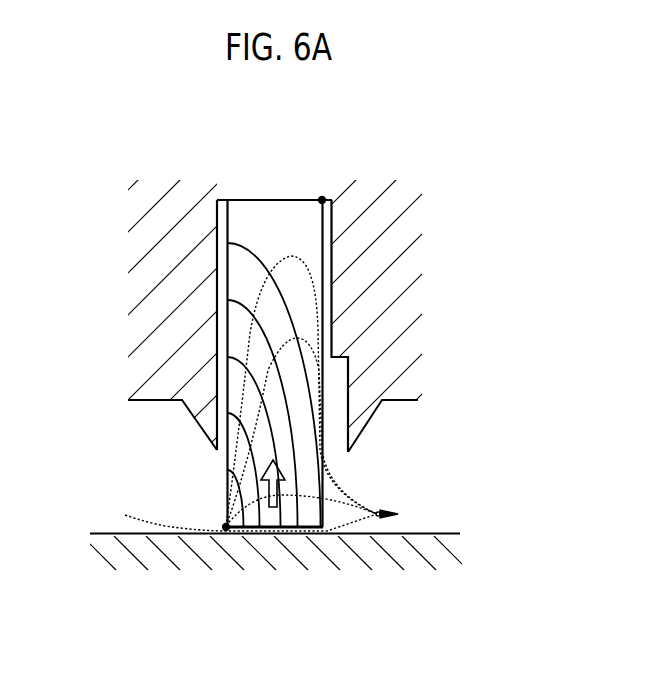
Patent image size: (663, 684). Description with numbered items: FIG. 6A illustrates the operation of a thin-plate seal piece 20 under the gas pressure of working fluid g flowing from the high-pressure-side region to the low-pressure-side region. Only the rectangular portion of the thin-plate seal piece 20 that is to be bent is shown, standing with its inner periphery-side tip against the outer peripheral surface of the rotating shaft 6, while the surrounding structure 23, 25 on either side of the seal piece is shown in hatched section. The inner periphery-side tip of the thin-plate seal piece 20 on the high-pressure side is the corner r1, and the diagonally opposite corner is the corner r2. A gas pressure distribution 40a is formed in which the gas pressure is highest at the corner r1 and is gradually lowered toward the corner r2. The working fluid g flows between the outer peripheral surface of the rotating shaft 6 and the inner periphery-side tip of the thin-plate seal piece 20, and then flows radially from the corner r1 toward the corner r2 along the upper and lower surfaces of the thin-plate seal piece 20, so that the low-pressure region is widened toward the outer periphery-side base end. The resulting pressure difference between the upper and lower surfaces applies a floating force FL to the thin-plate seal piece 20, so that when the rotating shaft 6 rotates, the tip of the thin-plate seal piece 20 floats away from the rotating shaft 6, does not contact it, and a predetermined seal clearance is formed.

The thin-plate seal piece 20 is at (225, 487).
The left block / holder 23 is at (195, 350).
The right block / holder 25 is at (380, 362).
The gas pressure distribution 40a is at (247, 252).
The rotating shaft 6 is at (198, 548).
The working fluid g is at (255, 513).
The corner r1 is at (224, 525).
The corner r2 is at (322, 199).
The floating force FL is at (273, 508).